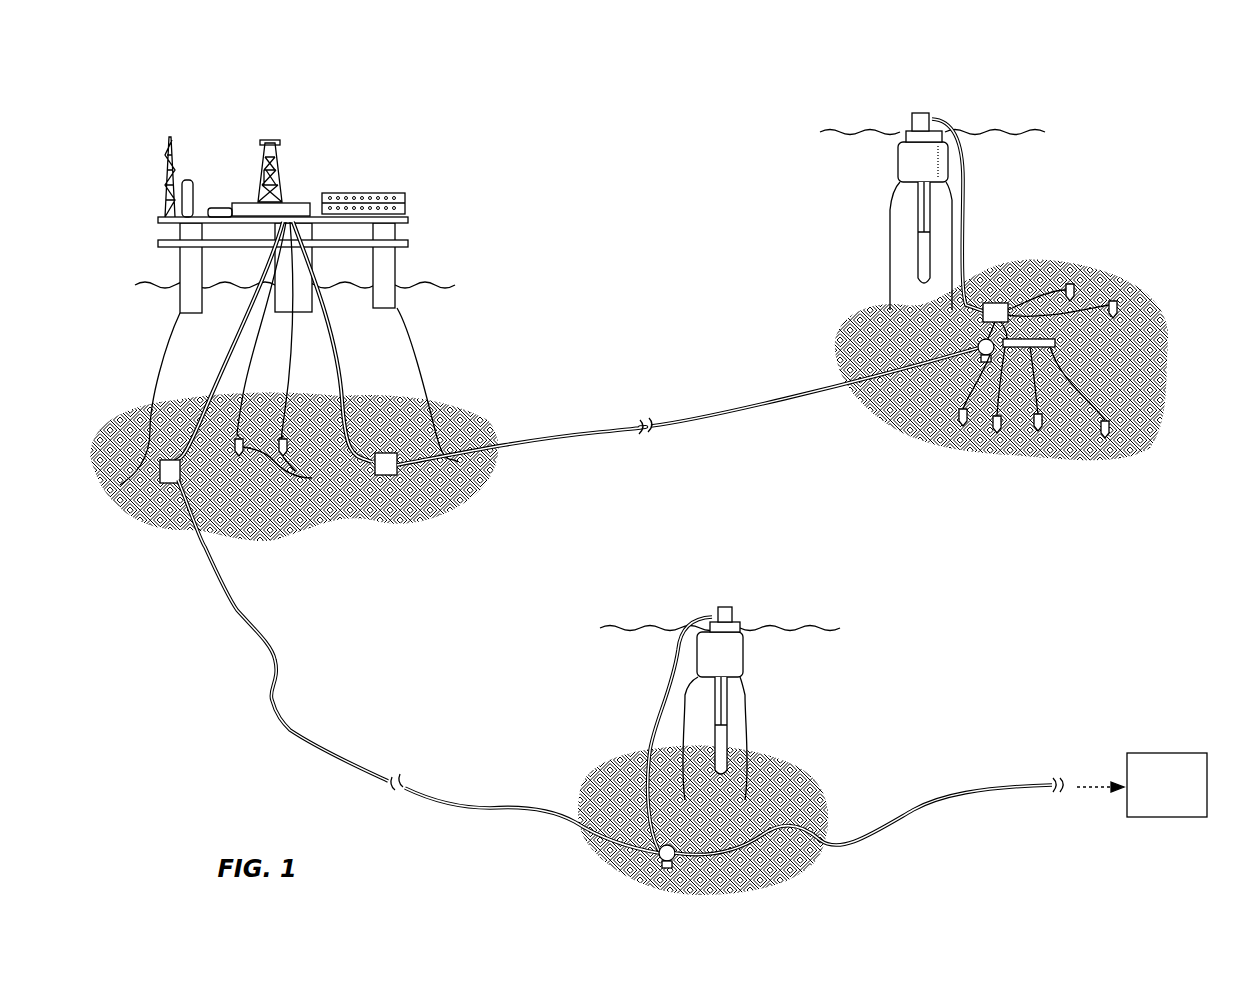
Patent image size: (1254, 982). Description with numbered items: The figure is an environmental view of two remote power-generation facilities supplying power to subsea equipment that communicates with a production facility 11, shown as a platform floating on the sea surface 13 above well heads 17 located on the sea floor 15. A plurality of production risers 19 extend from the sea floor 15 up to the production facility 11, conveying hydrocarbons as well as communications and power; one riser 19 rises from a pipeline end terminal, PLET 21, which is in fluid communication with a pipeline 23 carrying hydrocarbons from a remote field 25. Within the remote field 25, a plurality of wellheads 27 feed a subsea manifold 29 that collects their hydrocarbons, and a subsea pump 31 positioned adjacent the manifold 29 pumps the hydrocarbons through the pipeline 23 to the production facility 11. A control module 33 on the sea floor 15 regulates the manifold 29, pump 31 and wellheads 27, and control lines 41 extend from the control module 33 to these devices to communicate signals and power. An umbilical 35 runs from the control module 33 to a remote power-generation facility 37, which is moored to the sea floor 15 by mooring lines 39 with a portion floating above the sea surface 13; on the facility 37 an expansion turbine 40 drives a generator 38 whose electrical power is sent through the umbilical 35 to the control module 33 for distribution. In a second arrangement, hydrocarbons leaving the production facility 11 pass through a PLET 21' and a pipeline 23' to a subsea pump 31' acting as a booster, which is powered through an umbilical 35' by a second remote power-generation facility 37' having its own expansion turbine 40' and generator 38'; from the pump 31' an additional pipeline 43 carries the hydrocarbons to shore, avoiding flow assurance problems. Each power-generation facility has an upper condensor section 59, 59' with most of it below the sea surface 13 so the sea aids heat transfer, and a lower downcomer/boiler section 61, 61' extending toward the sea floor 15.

The production facility 11 is at (363, 192).
The sea surface 13 is at (452, 278).
The sea floor 15 is at (122, 417).
The well heads 17 is at (291, 466).
The production riser 19 is at (290, 368).
The pipeline end terminal (PLET) 21 is at (394, 418).
The PLET 21' is at (157, 503).
The pipeline 23 is at (687, 406).
The pipeline 23' is at (415, 666).
The remote field 25 is at (1066, 268).
The wellheads 27 is at (1117, 305).
The subsea manifold 29 is at (1056, 344).
The subsea pump 31 is at (957, 372).
The subsea pump 31' is at (635, 867).
The control module 33 is at (993, 302).
The umbilical 35 is at (980, 215).
The umbilical 35' is at (651, 734).
The remote power-generation facility 37 is at (926, 174).
The remote power-generation facility 37' is at (747, 662).
The generator 38 is at (923, 98).
The generator 38' is at (708, 589).
The mooring lines 39 is at (943, 296).
The expansion turbine 40 is at (898, 116).
The expansion turbine 40' is at (735, 591).
The control lines 41 is at (1028, 292).
The pipeline 43 is at (945, 798).
The condensor section 59 is at (893, 168).
The condensor section 59' is at (753, 654).
The downcomer/boiler section 61 is at (889, 232).
The downcomer/boiler section 61' is at (755, 725).